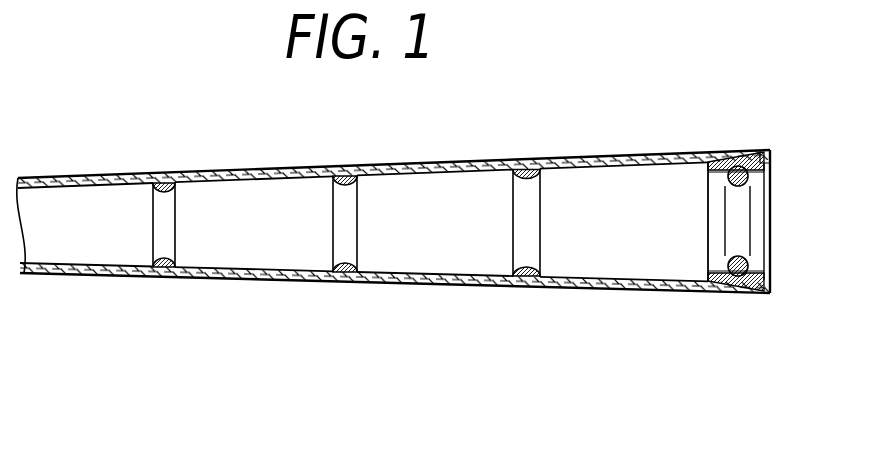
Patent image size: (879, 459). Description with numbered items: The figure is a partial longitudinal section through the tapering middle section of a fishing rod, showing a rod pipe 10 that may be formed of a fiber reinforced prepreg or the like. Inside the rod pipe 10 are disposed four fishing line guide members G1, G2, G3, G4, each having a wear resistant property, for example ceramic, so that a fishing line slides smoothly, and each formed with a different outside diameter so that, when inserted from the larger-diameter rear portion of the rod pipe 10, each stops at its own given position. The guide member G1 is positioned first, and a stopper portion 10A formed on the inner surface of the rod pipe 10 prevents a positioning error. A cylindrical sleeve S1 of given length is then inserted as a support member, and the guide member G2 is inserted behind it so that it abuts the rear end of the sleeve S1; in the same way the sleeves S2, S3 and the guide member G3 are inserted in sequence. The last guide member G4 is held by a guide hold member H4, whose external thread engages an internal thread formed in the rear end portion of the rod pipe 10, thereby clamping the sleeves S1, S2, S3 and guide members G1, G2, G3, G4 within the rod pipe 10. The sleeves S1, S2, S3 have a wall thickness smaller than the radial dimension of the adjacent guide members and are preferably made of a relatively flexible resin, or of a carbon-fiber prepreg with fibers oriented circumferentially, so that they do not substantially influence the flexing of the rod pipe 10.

The rod pipe 10 is at (440, 163).
The stopper portion 10A is at (113, 184).
The fishing line guide member G1 is at (165, 180).
The fishing line guide member G2 is at (343, 167).
The fishing line guide member G3 is at (524, 165).
The fishing line guide member G4 is at (737, 155).
The guide hold member H4 is at (768, 160).
The cylindrical sleeve S1 is at (258, 276).
The cylindrical sleeve S2 is at (430, 280).
The cylindrical sleeve S3 is at (615, 288).